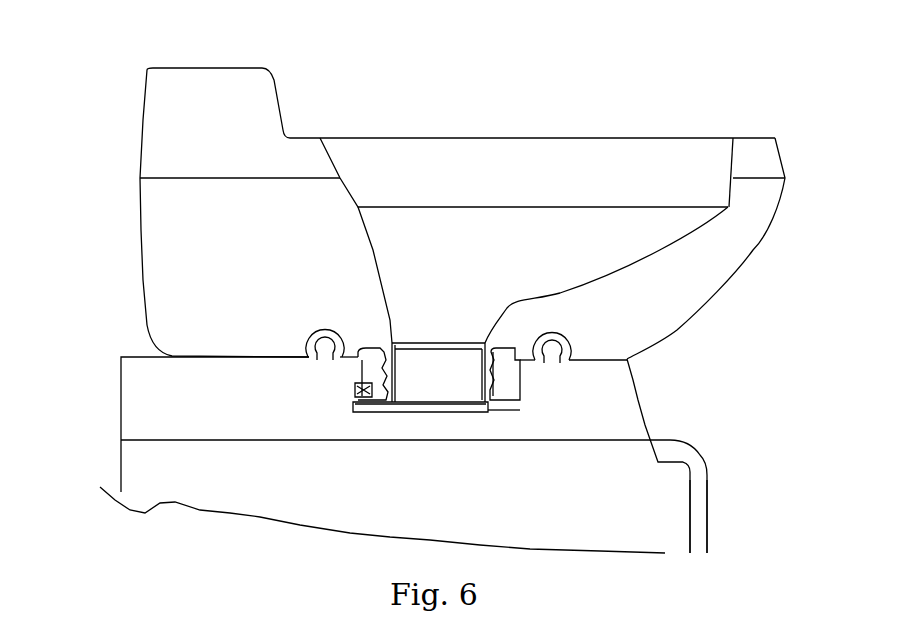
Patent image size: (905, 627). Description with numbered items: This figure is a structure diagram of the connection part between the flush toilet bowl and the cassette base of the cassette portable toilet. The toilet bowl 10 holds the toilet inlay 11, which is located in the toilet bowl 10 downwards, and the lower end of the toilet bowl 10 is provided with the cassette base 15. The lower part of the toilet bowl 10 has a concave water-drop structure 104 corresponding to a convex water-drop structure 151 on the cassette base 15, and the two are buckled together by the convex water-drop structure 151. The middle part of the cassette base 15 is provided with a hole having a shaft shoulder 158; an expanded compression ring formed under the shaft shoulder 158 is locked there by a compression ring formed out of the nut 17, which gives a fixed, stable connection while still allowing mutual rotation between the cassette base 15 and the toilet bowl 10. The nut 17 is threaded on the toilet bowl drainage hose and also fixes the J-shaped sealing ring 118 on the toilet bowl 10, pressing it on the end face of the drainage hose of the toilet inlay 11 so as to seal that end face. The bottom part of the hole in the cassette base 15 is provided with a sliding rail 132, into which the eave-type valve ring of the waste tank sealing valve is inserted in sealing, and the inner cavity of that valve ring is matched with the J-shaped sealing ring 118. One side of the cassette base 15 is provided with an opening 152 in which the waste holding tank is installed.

The toilet bowl 10 is at (657, 292).
The toilet inlay 11 is at (535, 165).
The cassette base 15 is at (678, 518).
The nut 17 is at (358, 390).
The concave water-drop structure 104 is at (565, 333).
The J-shaped sealing ring 118 is at (487, 408).
The sliding rail 132 is at (518, 410).
The convex water-drop structure 151 is at (603, 362).
The opening 152 is at (130, 397).
The shaft shoulder 158 is at (362, 368).